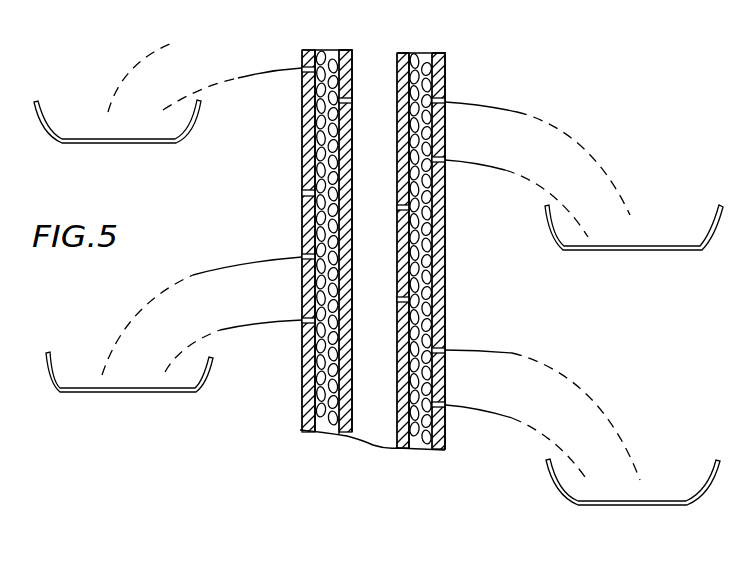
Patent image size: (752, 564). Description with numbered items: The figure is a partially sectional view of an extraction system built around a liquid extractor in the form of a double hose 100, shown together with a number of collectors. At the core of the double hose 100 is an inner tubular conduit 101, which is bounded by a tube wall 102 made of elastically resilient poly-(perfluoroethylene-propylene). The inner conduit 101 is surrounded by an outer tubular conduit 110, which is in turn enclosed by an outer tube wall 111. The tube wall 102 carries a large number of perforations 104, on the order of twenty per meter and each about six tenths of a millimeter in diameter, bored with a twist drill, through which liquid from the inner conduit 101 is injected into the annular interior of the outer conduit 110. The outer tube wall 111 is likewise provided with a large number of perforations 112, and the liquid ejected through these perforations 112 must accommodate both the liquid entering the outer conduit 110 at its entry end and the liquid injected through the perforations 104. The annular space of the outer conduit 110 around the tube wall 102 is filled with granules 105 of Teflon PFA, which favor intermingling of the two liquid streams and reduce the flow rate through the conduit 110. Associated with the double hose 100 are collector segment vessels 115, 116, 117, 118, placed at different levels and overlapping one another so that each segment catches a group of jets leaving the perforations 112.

The double hose 100 is at (302, 104).
The inner tubular conduit 101 is at (446, 60).
The tube wall 102 is at (348, 72).
The perforations 104 is at (393, 214).
The granules 105 is at (312, 212).
The outer tubular conduit 110 is at (427, 53).
The outer tube wall 111 is at (302, 152).
The perforations 112 is at (446, 404).
The collector segment vessel 115 is at (160, 144).
The collector segment vessel 116 is at (672, 252).
The collector segment vessel 117 is at (190, 393).
The collector segment vessel 118 is at (674, 507).